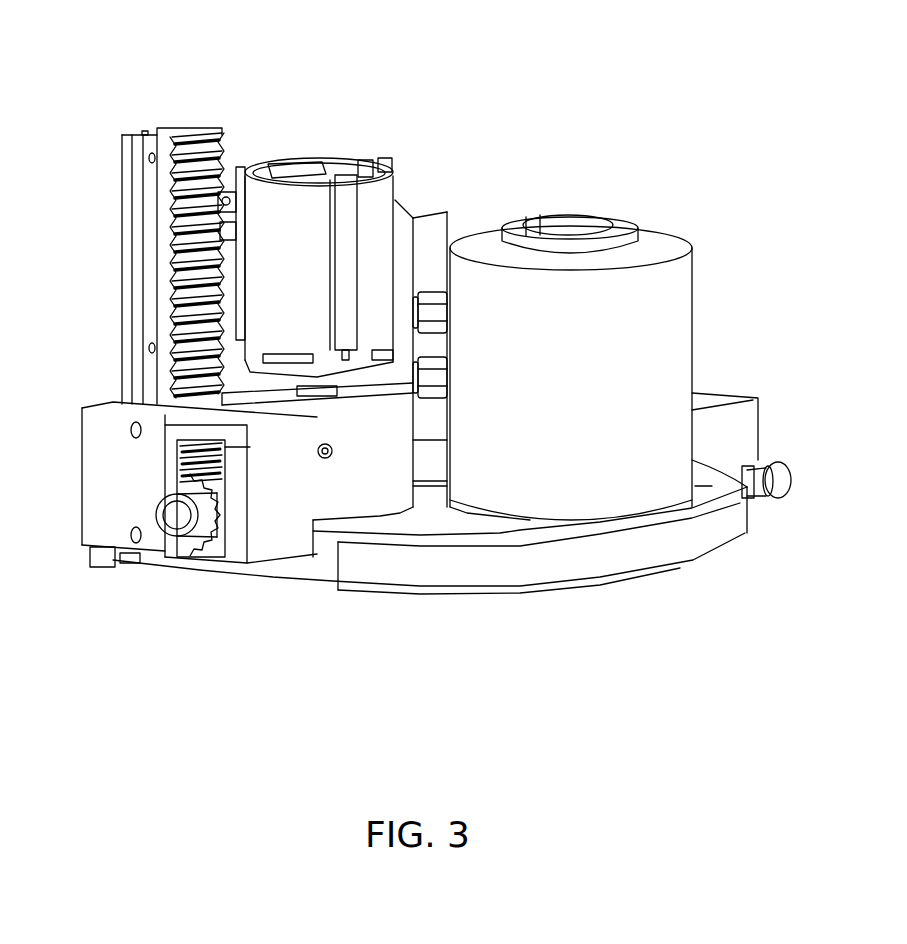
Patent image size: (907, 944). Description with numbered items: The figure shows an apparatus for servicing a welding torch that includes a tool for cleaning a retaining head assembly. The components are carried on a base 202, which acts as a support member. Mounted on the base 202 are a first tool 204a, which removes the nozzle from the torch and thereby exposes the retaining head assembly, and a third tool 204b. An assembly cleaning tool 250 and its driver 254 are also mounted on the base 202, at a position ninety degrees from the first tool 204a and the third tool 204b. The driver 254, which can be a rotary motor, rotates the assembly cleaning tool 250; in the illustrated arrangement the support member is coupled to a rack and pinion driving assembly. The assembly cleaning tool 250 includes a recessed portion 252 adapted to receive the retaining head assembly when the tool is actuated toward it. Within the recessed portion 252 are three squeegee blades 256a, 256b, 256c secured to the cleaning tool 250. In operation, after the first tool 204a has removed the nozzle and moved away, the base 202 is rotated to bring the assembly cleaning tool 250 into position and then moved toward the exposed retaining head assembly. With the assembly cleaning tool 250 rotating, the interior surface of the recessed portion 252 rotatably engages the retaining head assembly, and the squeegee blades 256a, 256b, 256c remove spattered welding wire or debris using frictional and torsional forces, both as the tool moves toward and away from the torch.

The base 202 is at (743, 487).
The first tool 204a is at (600, 390).
The third tool 204b is at (420, 230).
The assembly cleaning tool 250 is at (275, 142).
The recessed portion 252 is at (320, 157).
The driver 254 is at (105, 513).
The squeegee blade 256a is at (292, 167).
The squeegee blade 256b is at (377, 157).
The squeegee blade 256c is at (348, 262).